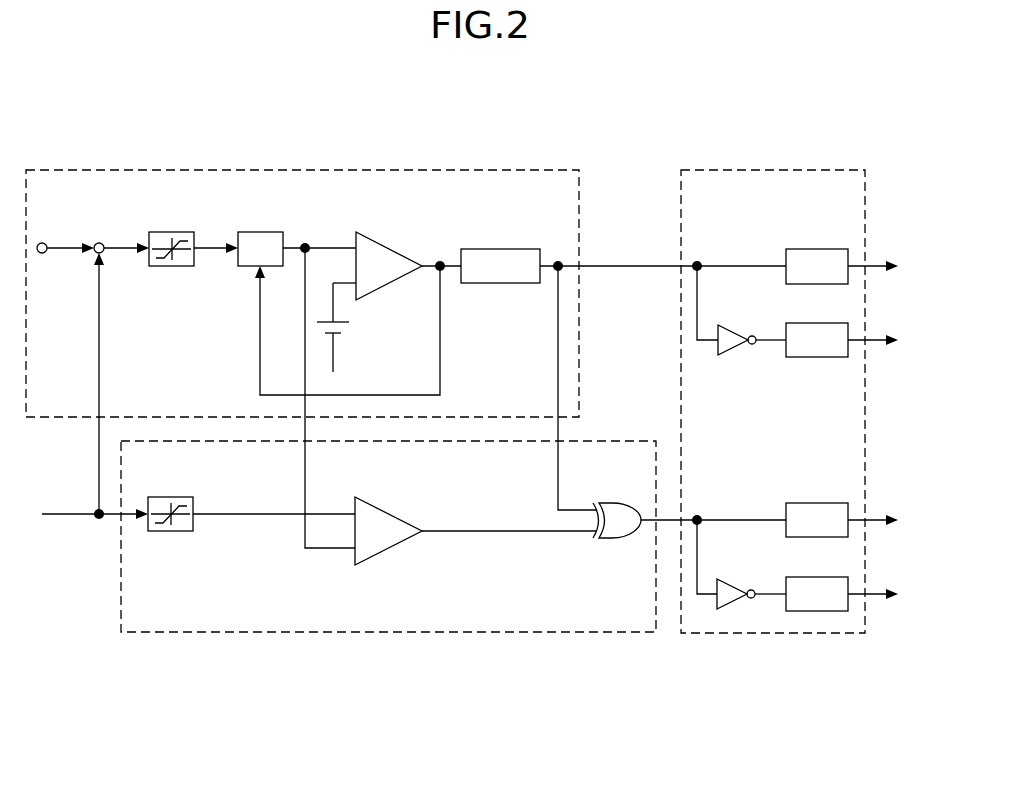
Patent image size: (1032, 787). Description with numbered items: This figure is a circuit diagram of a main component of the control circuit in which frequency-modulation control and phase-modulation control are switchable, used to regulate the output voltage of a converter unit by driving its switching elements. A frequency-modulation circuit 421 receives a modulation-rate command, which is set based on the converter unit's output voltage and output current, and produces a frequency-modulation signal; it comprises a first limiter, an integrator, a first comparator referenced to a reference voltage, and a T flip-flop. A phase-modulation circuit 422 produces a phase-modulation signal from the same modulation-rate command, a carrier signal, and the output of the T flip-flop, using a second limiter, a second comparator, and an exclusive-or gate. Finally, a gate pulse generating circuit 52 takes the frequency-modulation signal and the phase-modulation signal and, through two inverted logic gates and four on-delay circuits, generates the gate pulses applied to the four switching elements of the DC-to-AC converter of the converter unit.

The frequency-modulation circuit 421 is at (222, 170).
The phase-modulation circuit 422 is at (177, 632).
The gate pulse generating circuit 52 is at (725, 675).